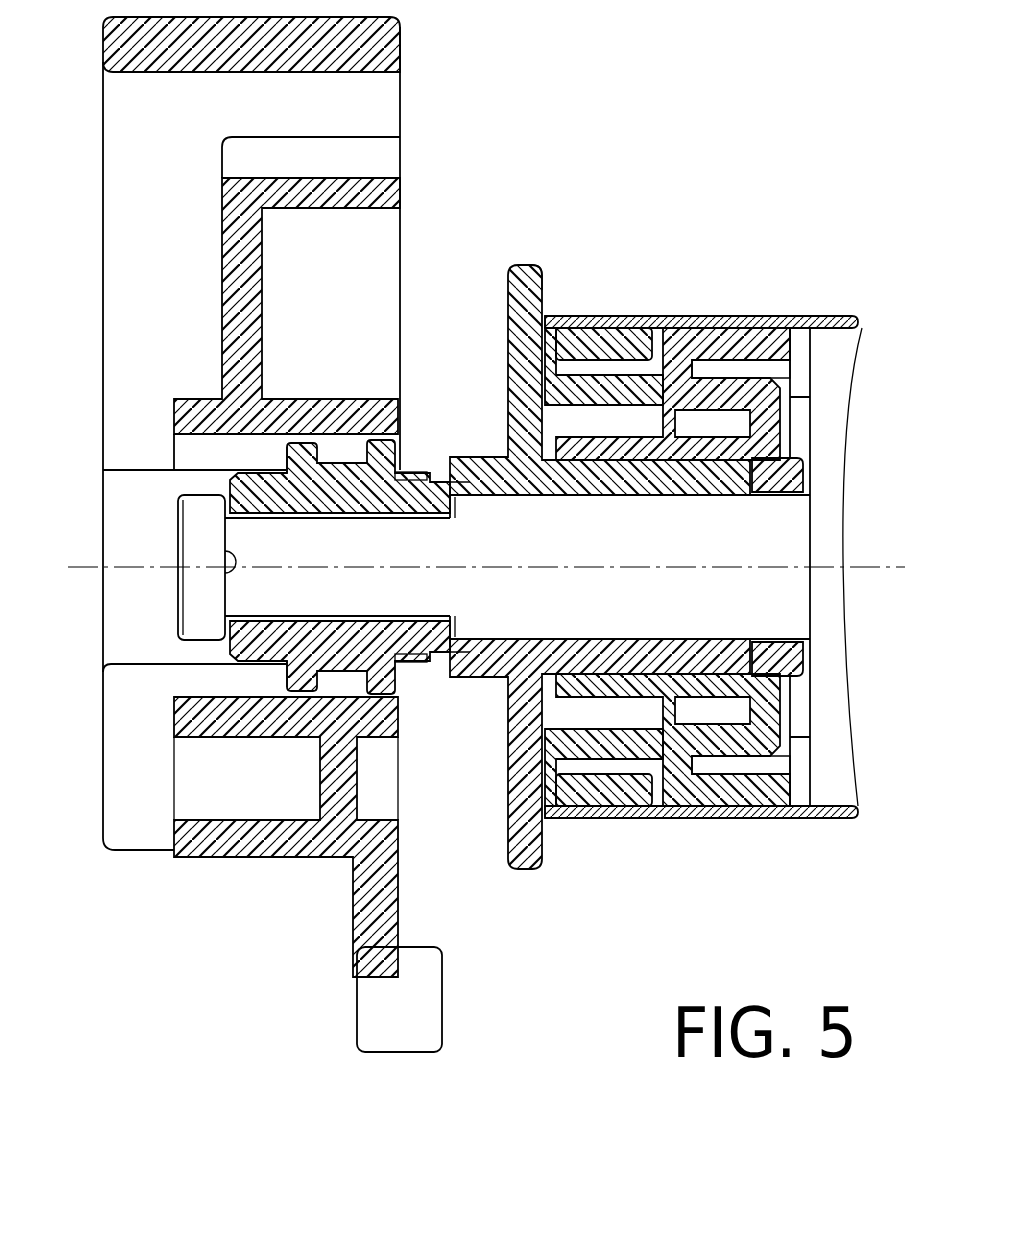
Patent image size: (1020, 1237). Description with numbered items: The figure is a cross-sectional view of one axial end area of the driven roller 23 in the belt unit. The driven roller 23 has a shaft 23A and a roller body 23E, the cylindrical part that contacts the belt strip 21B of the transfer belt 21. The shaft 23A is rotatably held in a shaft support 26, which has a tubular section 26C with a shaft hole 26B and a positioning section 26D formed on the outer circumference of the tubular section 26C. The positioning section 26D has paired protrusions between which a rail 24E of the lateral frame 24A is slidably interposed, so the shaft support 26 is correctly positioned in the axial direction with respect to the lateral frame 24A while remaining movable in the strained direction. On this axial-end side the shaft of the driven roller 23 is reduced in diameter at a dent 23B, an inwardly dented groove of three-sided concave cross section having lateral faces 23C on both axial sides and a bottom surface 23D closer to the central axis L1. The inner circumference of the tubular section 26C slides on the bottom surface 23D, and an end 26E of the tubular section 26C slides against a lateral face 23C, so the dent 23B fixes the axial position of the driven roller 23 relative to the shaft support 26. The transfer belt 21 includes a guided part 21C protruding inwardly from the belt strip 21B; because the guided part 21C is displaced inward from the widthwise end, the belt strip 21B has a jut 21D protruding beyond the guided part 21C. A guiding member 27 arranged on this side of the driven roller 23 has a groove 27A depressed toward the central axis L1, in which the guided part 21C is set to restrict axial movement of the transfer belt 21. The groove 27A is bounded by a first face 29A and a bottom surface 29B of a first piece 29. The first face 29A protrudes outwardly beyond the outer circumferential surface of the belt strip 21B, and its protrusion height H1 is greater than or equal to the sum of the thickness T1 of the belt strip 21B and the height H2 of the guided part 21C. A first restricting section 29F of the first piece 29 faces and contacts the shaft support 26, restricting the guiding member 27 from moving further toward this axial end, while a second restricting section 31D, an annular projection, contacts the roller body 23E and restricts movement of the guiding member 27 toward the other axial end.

The transfer belt 21 is at (838, 315).
The belt strip 21B is at (777, 318).
The guided part 21C is at (610, 324).
The jut 21D is at (508, 319).
The driven roller 23 is at (838, 376).
The shaft 23A is at (787, 611).
The dent 23B is at (416, 516).
The lateral face 23C is at (430, 598).
The bottom surface 23D is at (400, 470).
The roller body 23E is at (827, 523).
The lateral frame 24A is at (102, 114).
The rail 24E is at (174, 690).
The shaft support 26 is at (244, 477).
The shaft hole 26B is at (300, 512).
The tubular section 26C is at (250, 478).
The positioning section 26D is at (176, 520).
The end of tubular section 26E is at (320, 462).
The guiding member 27 is at (708, 322).
The groove 27A is at (640, 368).
The first piece 29 is at (504, 288).
The first face 29A is at (545, 287).
The bottom surface 29B is at (592, 372).
The first restricting section 29F is at (445, 480).
The second restricting section 31D is at (800, 464).
The central axis L1 is at (863, 567).
The height of protrusion of first face H1 is at (580, 818).
The height of guided section H2 is at (607, 745).
The thickness of belt strip T1 is at (882, 845).